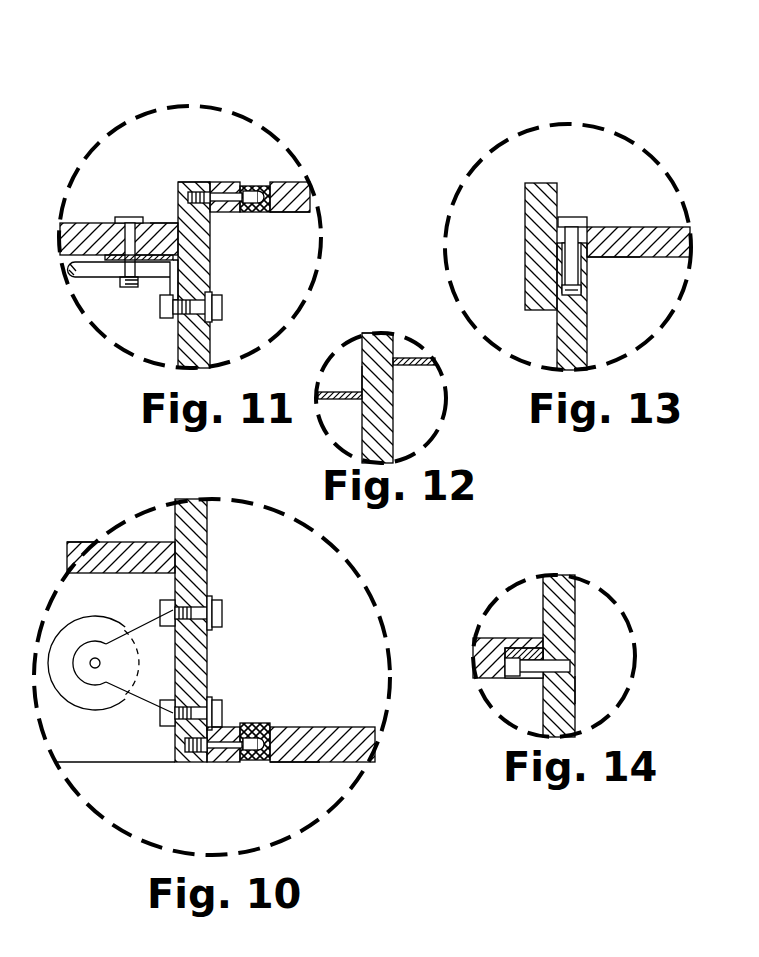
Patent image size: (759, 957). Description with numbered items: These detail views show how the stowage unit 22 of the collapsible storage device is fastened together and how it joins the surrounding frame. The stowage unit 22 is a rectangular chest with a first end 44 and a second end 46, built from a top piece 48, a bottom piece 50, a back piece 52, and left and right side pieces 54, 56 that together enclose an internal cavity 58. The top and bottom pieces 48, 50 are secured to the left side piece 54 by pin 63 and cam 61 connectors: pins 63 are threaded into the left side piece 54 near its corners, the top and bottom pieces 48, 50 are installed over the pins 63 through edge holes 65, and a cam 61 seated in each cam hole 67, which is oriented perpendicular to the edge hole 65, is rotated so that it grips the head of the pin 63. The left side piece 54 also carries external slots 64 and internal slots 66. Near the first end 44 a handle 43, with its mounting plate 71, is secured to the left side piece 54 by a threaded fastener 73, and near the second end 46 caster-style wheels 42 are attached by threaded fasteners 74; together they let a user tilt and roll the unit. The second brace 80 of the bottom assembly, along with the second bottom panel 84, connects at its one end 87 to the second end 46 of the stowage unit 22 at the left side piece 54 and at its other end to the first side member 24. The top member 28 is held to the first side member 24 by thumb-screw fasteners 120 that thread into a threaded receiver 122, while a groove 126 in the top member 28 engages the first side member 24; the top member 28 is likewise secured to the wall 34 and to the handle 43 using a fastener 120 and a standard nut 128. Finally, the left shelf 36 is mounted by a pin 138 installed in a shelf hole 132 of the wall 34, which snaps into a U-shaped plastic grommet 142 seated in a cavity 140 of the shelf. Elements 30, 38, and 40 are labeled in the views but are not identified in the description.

In FIG. 10, the stowage unit 22 is at (0, 414).
In FIG. 13, the first side member 24 is at (586, 350).
In FIG. 11, the top member 28 is at (92, 223).
In FIG. 13, the top member 28 is at (635, 246).
In FIG. 13, the plate 30 is at (525, 225).
In FIG. 14, the wall 34 is at (580, 615).
In FIG. 14, the left shelf 36 is at (495, 636).
In FIG. 12, the left bracket 38 is at (338, 400).
In FIG. 12, the right bracket 40 is at (418, 365).
In FIG. 10, the wheels 42 is at (142, 693).
In FIG. 11, the handle 43 is at (103, 286).
In FIG. 11, the first end 44 is at (208, 181).
In FIG. 10, the second end 46 is at (165, 748).
In FIG. 11, the top piece 48 is at (290, 181).
In FIG. 10, the bottom piece 50 is at (333, 727).
In FIG. 11, the back piece 52 is at (260, 298).
In FIG. 10, the back piece 52 is at (306, 599).
In FIG. 11, the left side piece 54 is at (208, 250).
In FIG. 12, the left side piece 54 is at (394, 420).
In FIG. 10, the left side piece 54 is at (208, 524).
In FIG. 10, the right side piece 56 is at (13, 473).
In FIG. 10, the internal cavity 58 is at (2, 595).
In FIG. 11, the cam 61 is at (257, 221).
In FIG. 10, the cam 61 is at (255, 723).
In FIG. 11, the pin 63 is at (212, 190).
In FIG. 10, the pin 63 is at (227, 763).
In FIG. 12, the external slots 64 is at (362, 380).
In FIG. 11, the edge holes 65 is at (230, 184).
In FIG. 10, the edge holes 65 is at (245, 727).
In FIG. 12, the internal slots 66 is at (375, 333).
In FIG. 11, the cam holes 67 is at (303, 210).
In FIG. 10, the cam holes 67 is at (290, 753).
In FIG. 11, the mounting plate 71 is at (160, 222).
In FIG. 11, the threaded fastener 73 is at (220, 308).
In FIG. 10, the threaded fasteners 74 is at (224, 612).
In FIG. 10, the second brace 80 is at (98, 600).
In FIG. 10, the second bottom panel 84 is at (136, 555).
In FIG. 10, the one end of second brace 87 is at (147, 732).
In FIG. 11, the threaded fasteners 120 is at (130, 216).
In FIG. 13, the threaded fasteners 120 is at (577, 216).
In FIG. 13, the threaded receiver 122 is at (580, 304).
In FIG. 13, the grooves 126 is at (600, 262).
In FIG. 11, the standard nut 128 is at (110, 278).
In FIG. 14, the shelf hole 132 is at (576, 690).
In FIG. 14, the pin 138 is at (562, 657).
In FIG. 14, the cavity 140 is at (512, 670).
In FIG. 14, the grommet 142 is at (517, 648).